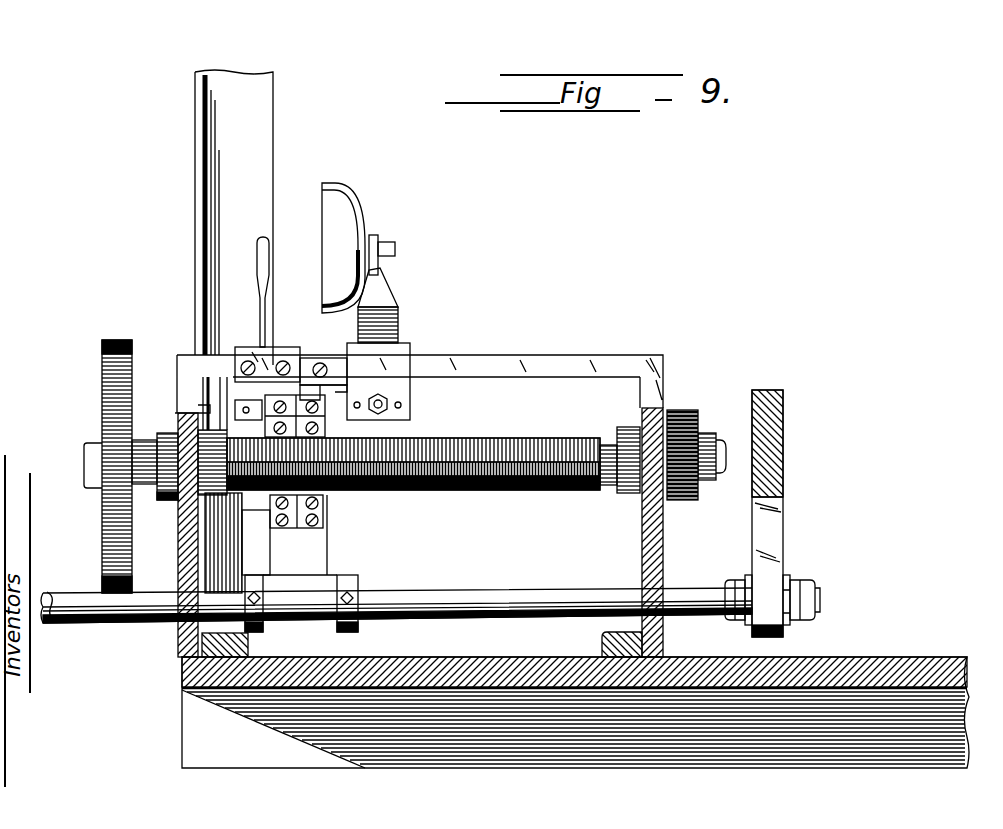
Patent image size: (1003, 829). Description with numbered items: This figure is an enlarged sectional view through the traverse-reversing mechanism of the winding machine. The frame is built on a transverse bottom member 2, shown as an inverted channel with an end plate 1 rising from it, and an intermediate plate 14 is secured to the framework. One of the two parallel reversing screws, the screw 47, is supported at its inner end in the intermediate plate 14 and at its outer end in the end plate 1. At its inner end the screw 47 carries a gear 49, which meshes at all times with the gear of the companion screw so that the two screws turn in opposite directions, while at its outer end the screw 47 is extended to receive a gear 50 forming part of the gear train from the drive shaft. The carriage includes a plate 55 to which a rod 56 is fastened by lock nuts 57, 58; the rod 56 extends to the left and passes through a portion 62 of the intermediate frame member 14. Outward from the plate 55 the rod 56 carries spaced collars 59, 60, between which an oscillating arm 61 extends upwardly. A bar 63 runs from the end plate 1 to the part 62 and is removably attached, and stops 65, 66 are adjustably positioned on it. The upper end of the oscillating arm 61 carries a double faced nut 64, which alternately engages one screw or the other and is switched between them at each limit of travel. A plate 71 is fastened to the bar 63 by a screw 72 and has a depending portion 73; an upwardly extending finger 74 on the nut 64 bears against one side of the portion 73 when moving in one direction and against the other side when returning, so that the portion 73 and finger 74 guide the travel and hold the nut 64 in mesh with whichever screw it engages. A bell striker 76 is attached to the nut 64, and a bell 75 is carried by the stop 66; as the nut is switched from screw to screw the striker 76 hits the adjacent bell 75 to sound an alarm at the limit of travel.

The end plate 1 is at (178, 546).
The transverse bottom member 2 is at (882, 690).
The intermediate plate 14 is at (656, 640).
The screw 47 is at (502, 437).
The gear 49 is at (685, 406).
The gear 50 is at (122, 368).
The plate 55 is at (781, 540).
The rod 56 is at (562, 590).
The lock nut 57 is at (736, 621).
The lock nut 58 is at (800, 584).
The collar 59 is at (258, 636).
The collar 60 is at (348, 590).
The oscillating arm 61 is at (320, 535).
The portion 62 is at (660, 555).
The bar 63 is at (500, 365).
The double faced nut 64 is at (325, 430).
The stop 65 is at (278, 352).
The stop 66 is at (396, 353).
The plate 71 is at (340, 360).
The screw 72 is at (321, 363).
The depending portion 73 is at (326, 392).
The finger 74 is at (256, 362).
The bell 75 is at (352, 212).
The bell striker 76 is at (266, 250).